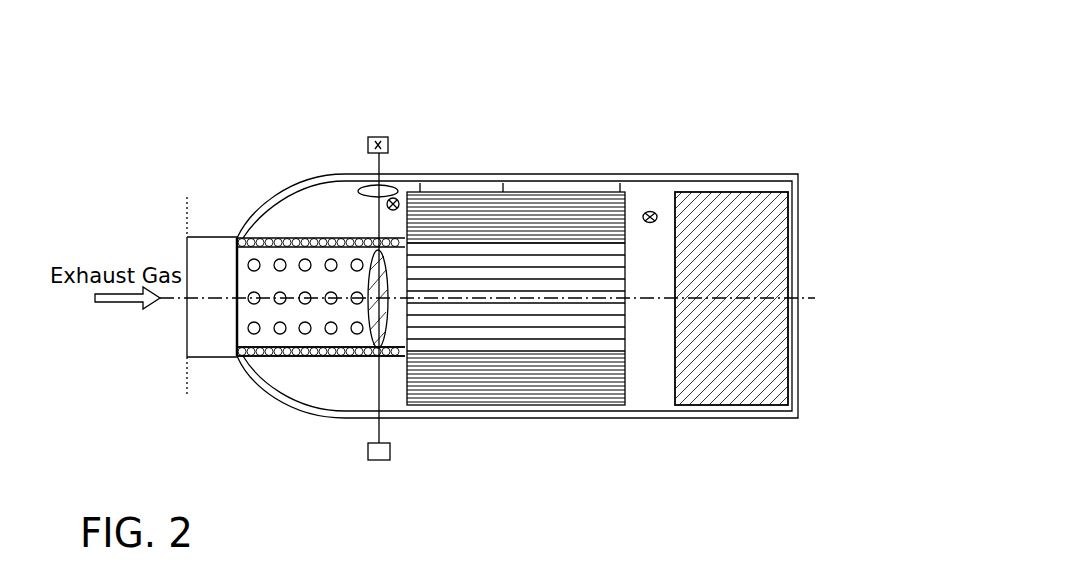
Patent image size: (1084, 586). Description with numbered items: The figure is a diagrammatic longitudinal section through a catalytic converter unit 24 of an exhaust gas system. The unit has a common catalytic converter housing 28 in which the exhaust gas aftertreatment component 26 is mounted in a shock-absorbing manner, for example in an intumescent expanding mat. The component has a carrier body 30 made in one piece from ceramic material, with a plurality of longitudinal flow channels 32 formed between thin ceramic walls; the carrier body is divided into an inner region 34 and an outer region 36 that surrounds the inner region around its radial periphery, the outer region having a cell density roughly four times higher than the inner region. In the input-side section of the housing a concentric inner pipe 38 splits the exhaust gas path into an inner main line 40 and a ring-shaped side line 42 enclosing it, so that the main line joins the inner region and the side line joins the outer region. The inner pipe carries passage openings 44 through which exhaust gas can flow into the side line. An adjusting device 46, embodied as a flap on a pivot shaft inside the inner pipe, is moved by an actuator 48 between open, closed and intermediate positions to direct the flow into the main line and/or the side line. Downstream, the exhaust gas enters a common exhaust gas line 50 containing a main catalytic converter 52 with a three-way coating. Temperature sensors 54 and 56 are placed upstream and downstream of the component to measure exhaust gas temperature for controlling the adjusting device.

The catalytic converter unit 24 is at (605, 98).
The exhaust gas aftertreatment component 26 is at (588, 172).
The catalytic converter housing 28 is at (665, 416).
The carrier body 30 is at (477, 370).
The flow channels 32 is at (572, 308).
The inner region 34 is at (469, 290).
The outer region 36 is at (588, 223).
The inner pipe 38 is at (297, 237).
The main line 40 is at (306, 294).
The side line 42 is at (314, 234).
The passage openings 44 is at (303, 352).
The adjusting device 46 is at (375, 330).
The actuator 48 is at (375, 136).
The common exhaust gas line 50 is at (635, 343).
The main catalytic converter 52 is at (733, 181).
The temperature sensor 54 is at (397, 199).
The temperature sensor 56 is at (654, 211).